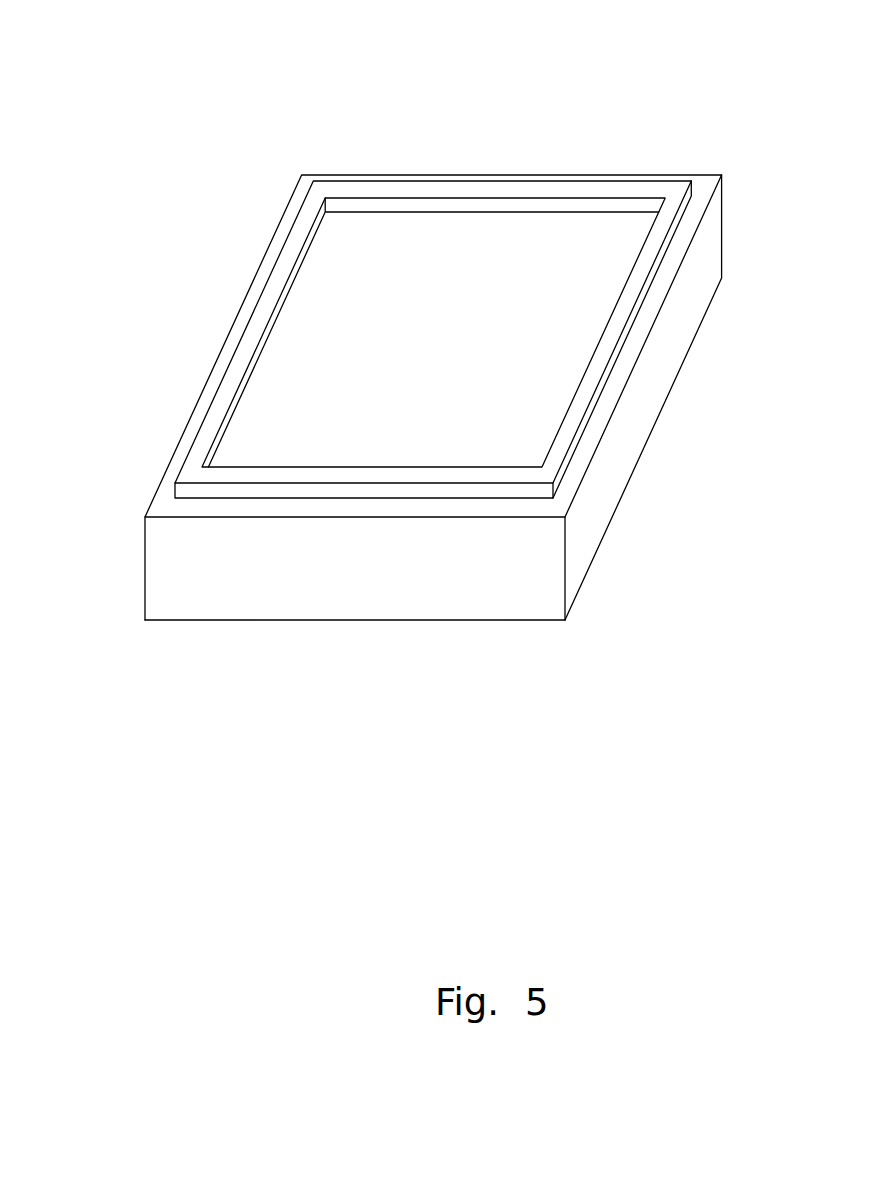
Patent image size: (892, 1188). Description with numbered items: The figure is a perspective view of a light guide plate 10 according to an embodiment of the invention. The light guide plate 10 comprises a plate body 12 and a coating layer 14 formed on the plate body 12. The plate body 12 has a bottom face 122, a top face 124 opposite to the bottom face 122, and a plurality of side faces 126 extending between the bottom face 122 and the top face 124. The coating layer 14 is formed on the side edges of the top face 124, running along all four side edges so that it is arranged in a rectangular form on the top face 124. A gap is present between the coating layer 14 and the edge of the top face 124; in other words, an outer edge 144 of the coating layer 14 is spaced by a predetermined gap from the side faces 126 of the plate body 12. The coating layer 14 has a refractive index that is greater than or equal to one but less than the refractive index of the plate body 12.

The light guide plate 10 is at (497, 58).
The plate body 12 is at (295, 166).
The coating layer 14 is at (270, 300).
The bottom face 122 is at (435, 620).
The top face 124 is at (565, 487).
The side faces 126 is at (305, 593).
The outer edge 144 is at (190, 492).